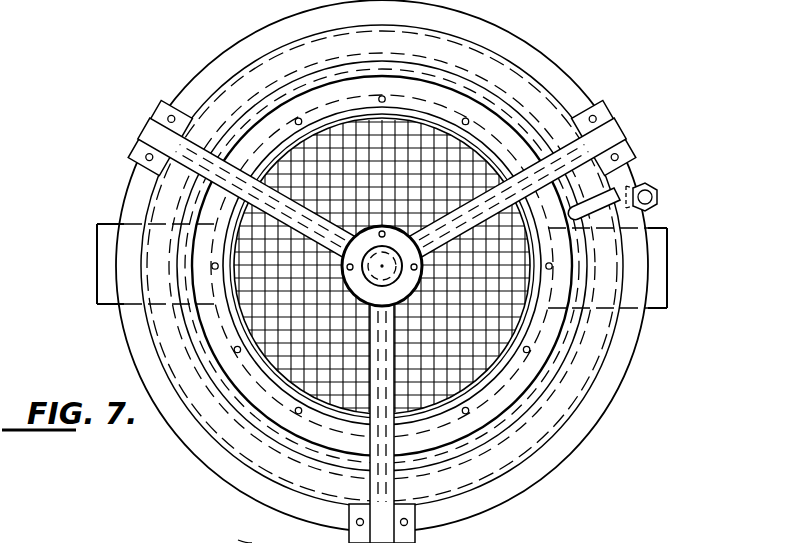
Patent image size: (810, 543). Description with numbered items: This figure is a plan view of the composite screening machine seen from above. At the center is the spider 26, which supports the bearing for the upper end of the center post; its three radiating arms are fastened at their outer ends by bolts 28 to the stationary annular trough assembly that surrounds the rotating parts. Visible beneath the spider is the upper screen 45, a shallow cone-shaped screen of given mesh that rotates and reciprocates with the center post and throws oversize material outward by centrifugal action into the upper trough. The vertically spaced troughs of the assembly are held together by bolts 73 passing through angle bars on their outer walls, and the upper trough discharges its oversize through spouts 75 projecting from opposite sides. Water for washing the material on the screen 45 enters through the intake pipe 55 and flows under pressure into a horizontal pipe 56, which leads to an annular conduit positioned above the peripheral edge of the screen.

The spider 26 is at (187, 162).
The bolts 28 is at (169, 116).
The screen 45 is at (480, 347).
The intake pipe 55 is at (656, 201).
The horizontal pipes 56 is at (598, 205).
The bolts 73 is at (238, 540).
The spouts 75 is at (99, 260).